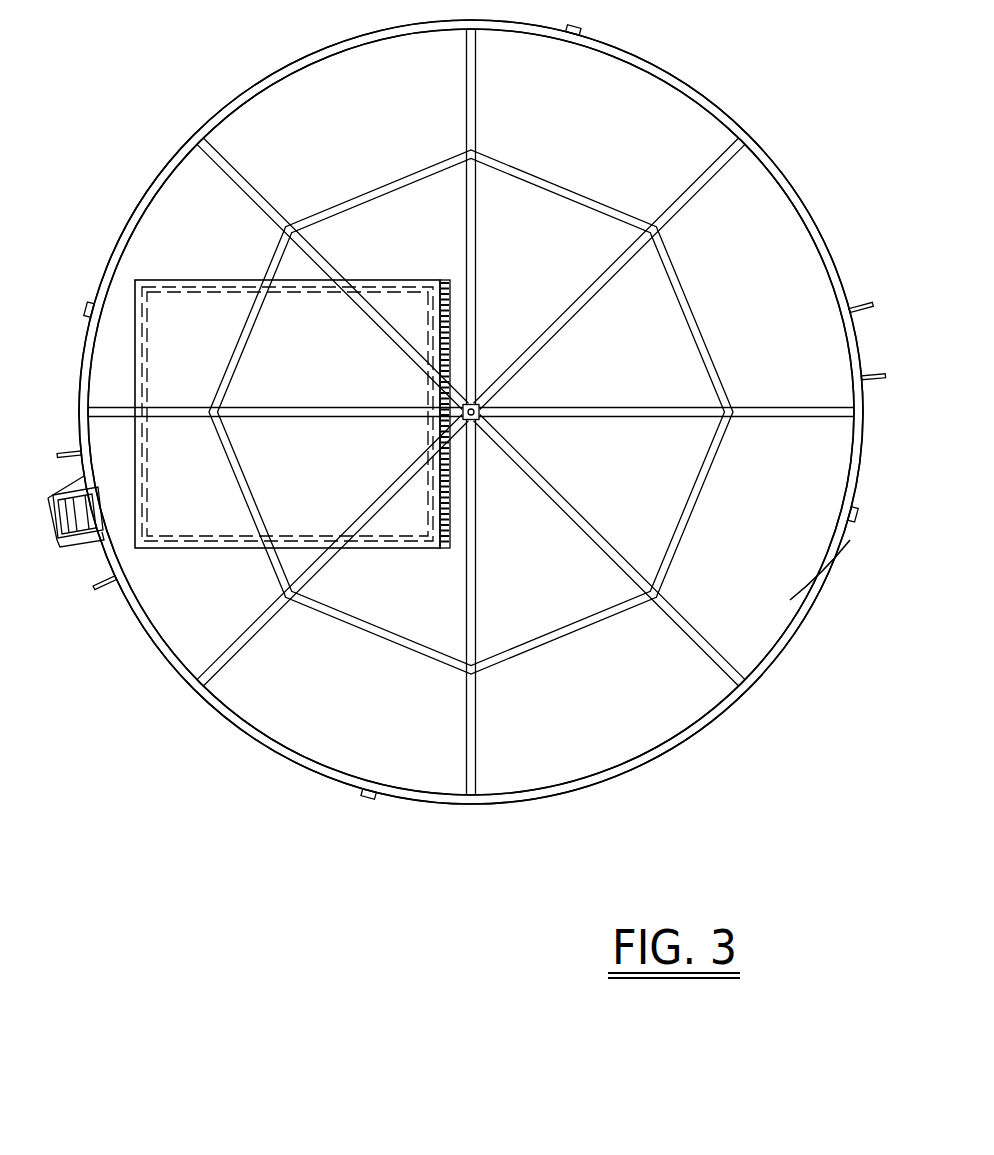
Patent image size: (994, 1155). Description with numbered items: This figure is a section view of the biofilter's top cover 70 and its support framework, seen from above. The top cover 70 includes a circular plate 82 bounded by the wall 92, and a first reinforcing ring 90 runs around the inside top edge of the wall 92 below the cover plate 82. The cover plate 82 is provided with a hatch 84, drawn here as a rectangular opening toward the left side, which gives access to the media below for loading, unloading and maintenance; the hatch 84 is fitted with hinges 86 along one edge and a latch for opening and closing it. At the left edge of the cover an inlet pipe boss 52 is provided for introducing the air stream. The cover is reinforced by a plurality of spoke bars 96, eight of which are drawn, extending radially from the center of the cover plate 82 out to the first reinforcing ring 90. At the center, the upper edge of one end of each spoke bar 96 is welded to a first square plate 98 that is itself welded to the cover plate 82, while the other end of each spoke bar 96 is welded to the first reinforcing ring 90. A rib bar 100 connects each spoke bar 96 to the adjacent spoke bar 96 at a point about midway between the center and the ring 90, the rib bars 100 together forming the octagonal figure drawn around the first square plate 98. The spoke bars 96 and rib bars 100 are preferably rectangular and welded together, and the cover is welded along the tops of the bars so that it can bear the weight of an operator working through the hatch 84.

The inlet pipe boss 52 is at (56, 528).
The top cover 70 is at (812, 626).
The circular plate 82 is at (806, 562).
The hatch 84 is at (182, 316).
The hinges 86 is at (450, 318).
The first reinforcing ring 90 is at (300, 72).
The wall 92 is at (276, 74).
The spoke bars 96 is at (466, 88).
The first square plate 98 is at (482, 408).
The rib bar 100 is at (708, 300).